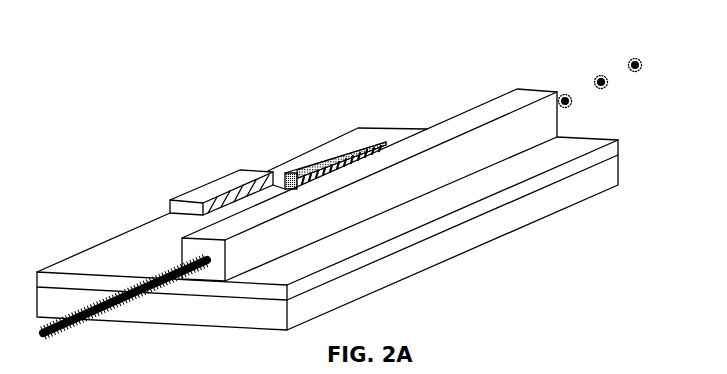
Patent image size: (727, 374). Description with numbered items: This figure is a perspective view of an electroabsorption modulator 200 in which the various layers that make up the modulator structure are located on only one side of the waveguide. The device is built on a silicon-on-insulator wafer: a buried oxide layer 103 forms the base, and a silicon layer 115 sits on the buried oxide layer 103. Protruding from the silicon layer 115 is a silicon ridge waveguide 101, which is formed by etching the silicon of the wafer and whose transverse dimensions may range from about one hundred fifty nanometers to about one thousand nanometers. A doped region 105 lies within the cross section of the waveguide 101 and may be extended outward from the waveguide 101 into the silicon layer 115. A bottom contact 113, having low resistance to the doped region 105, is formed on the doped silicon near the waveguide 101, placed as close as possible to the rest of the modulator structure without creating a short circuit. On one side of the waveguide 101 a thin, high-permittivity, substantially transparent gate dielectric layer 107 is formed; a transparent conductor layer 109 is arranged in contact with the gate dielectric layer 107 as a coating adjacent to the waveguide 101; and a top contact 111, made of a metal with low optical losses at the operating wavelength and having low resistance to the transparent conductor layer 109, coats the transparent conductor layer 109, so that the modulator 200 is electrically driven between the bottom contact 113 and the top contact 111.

The modulator 200 is at (121, 70).
The silicon ridge waveguide 101 is at (498, 105).
The buried oxide layer 103 is at (552, 203).
The silicon layer 115 is at (587, 160).
The bottom contact 113 is at (210, 190).
The doped region 105 is at (323, 160).
The gate dielectric layer 107 is at (330, 177).
The transparent conductor layer 109 is at (343, 165).
The top contact 111 is at (357, 147).